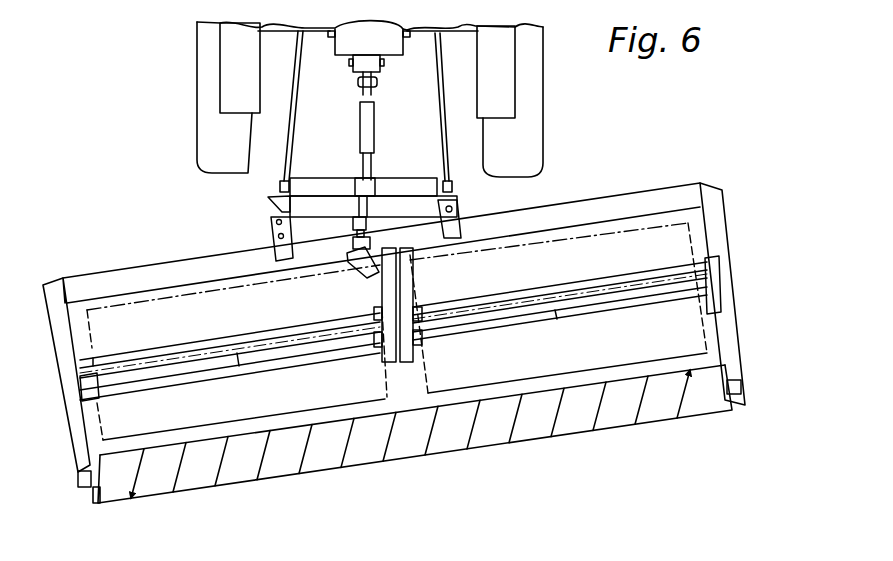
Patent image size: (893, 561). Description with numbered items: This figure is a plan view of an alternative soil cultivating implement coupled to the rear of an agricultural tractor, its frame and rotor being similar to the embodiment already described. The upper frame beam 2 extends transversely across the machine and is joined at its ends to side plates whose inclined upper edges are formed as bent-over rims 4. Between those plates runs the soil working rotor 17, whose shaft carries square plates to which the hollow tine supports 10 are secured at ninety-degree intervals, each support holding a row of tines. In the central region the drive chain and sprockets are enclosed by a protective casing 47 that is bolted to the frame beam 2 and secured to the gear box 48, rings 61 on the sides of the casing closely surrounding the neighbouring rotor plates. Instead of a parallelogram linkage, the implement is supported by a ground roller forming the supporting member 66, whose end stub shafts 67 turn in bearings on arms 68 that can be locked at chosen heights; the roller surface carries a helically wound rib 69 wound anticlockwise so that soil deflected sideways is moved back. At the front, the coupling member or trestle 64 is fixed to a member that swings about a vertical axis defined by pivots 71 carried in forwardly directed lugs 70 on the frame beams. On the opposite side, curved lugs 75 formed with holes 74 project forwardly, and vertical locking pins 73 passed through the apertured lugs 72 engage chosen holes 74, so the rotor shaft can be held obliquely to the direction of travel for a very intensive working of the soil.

The upper frame beam 2 is at (588, 204).
The bent-over rims 4 is at (68, 350).
The tine supports 10 is at (316, 340).
The soil working rotor 17 is at (173, 298).
The protective casing 47 is at (397, 285).
The gear box 48 is at (362, 268).
The rings 61 is at (88, 402).
The coupling member or trestle 64 is at (397, 182).
The supporting member 66 is at (352, 468).
The stub shafts 67 is at (93, 503).
The arms 68 is at (78, 476).
The helically wound rib 69 is at (563, 437).
The forwardly directed lugs 70 is at (460, 216).
The pivots 71 is at (452, 209).
The apertured lugs 72 is at (268, 194).
The vertical locking pins 73 is at (268, 196).
The holes 74 is at (278, 236).
The curved lugs 75 is at (288, 240).